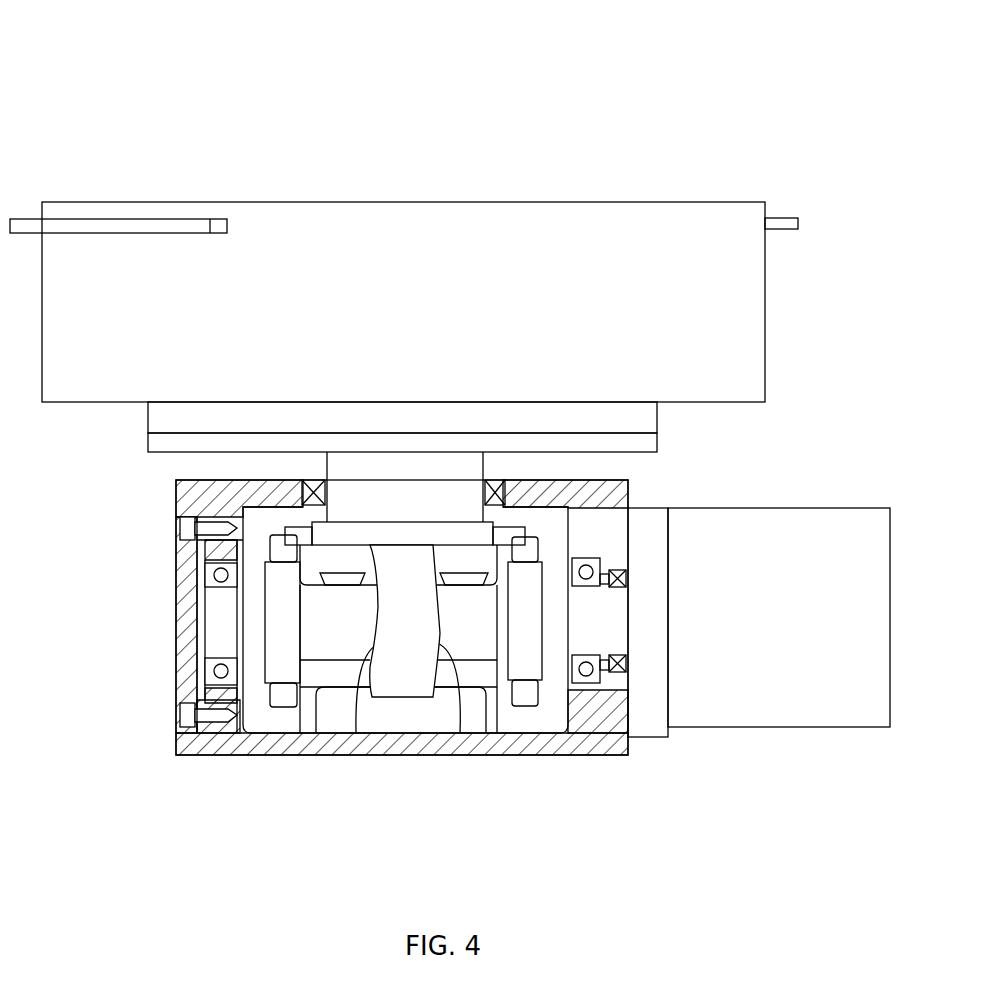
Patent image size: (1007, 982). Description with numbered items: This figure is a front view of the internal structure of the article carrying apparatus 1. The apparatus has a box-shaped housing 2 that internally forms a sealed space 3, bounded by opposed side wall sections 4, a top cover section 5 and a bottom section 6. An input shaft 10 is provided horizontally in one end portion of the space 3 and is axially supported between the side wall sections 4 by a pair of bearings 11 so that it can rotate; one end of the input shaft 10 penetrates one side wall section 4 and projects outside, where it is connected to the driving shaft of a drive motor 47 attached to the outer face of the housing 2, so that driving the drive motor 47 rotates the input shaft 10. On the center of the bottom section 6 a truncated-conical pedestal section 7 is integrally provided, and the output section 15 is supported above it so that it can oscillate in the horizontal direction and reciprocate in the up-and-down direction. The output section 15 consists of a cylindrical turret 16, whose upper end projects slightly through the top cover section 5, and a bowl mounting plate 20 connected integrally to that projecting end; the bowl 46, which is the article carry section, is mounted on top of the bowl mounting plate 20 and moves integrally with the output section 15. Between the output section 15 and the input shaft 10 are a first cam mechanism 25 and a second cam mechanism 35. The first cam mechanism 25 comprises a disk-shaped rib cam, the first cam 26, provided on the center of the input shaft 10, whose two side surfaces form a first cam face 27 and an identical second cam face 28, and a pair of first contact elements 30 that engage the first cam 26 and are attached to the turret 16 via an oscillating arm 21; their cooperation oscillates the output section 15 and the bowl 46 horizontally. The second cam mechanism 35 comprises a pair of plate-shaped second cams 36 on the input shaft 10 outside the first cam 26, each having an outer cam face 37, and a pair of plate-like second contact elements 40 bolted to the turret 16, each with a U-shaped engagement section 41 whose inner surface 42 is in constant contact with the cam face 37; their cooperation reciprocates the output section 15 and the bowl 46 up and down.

The article carrying apparatus 1 is at (146, 100).
The housing 2 is at (160, 515).
The sealed space 3 is at (285, 717).
The side wall sections 4 is at (622, 492).
The top cover section 5 is at (565, 478).
The bottom section 6 is at (484, 745).
The pedestal section 7 is at (338, 750).
The input shaft 10 is at (623, 637).
The bearings 11 is at (220, 575).
The output section 15 is at (312, 470).
The turret 16 is at (375, 465).
The bowl mounting plate 20 is at (527, 440).
The oscillating arm 21 is at (603, 488).
The first cam mechanism 25 is at (410, 530).
The first cam 26 is at (407, 725).
The first cam face 27 is at (380, 700).
The second cam face 28 is at (460, 700).
The first contact elements 30 is at (467, 563).
The second cam mechanism 35 is at (278, 700).
The second cams 36 is at (250, 738).
The cam face 37 is at (290, 690).
The second contact elements 40 is at (257, 530).
The engagement section 41 is at (205, 542).
The inner surface 42 is at (240, 592).
The bowl 46 is at (628, 210).
The drive motor 47 is at (820, 515).